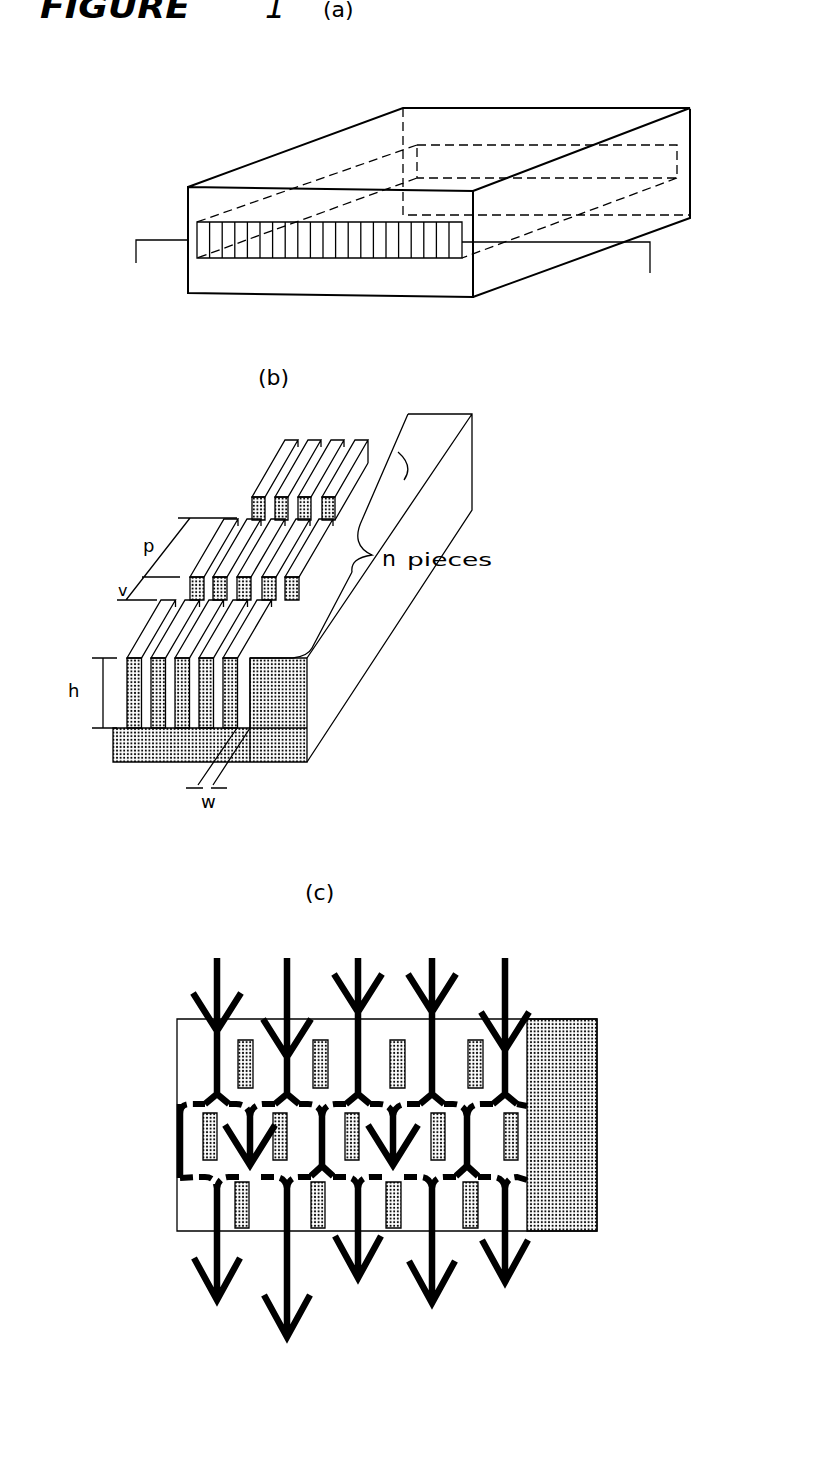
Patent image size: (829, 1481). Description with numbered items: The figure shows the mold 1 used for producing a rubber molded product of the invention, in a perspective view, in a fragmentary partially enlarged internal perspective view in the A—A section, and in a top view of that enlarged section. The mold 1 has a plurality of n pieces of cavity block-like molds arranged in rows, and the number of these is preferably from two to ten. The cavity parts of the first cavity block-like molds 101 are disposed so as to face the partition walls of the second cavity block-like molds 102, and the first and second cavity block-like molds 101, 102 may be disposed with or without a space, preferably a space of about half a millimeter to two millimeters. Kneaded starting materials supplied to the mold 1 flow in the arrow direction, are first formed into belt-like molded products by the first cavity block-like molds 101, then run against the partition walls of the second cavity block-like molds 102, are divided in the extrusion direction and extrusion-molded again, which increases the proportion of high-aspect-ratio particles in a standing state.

The mold 1 is at (403, 84).
The first cavity block-like mold 101 is at (265, 482).
The second cavity block-like mold 102 is at (237, 517).